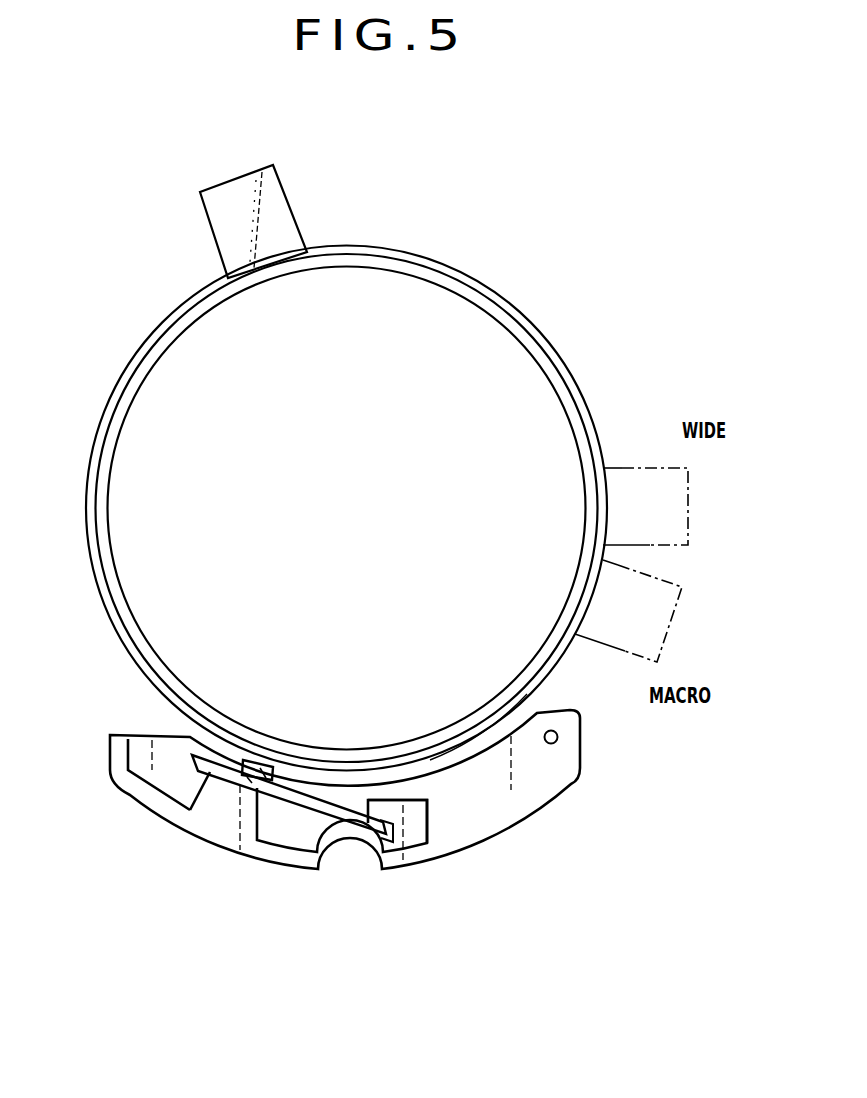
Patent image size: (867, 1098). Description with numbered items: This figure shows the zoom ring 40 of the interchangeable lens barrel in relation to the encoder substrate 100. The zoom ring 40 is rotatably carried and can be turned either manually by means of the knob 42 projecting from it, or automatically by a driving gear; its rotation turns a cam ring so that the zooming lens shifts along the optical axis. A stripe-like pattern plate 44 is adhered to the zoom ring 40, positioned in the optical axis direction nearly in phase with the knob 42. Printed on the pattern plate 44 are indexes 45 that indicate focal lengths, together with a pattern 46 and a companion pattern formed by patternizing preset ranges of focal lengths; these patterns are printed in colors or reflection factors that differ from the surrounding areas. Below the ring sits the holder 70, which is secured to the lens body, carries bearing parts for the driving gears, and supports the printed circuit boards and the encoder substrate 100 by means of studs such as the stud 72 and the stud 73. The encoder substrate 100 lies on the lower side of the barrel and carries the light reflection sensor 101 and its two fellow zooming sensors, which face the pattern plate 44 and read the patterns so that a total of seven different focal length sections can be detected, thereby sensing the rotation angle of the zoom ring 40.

The zoom ring 40 is at (533, 345).
The knob 42 is at (278, 233).
The pattern plate 44 is at (123, 635).
The indexes 45 is at (463, 282).
The pattern 46 is at (468, 736).
The holder 70 is at (477, 840).
The stud 72 is at (217, 787).
The stud 73 is at (420, 808).
The encoder substrate 100 is at (300, 800).
The light reflection sensor 101 is at (243, 775).